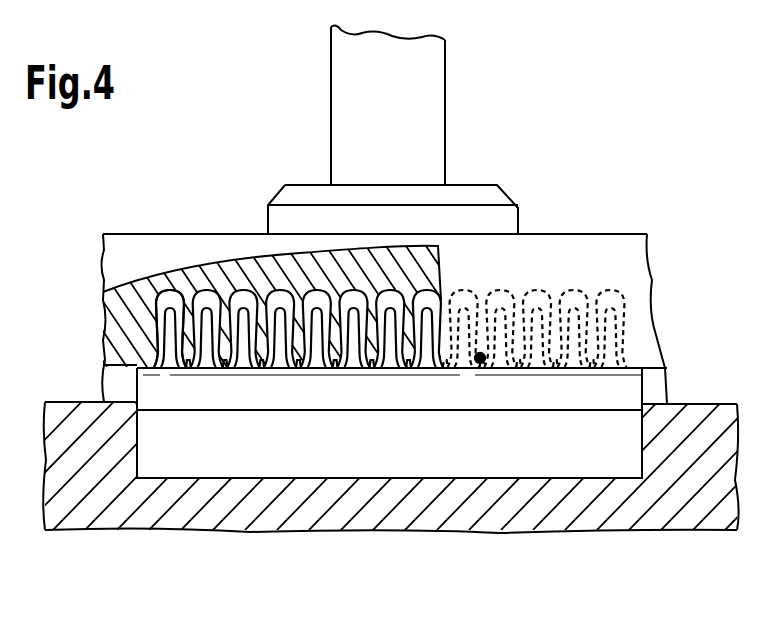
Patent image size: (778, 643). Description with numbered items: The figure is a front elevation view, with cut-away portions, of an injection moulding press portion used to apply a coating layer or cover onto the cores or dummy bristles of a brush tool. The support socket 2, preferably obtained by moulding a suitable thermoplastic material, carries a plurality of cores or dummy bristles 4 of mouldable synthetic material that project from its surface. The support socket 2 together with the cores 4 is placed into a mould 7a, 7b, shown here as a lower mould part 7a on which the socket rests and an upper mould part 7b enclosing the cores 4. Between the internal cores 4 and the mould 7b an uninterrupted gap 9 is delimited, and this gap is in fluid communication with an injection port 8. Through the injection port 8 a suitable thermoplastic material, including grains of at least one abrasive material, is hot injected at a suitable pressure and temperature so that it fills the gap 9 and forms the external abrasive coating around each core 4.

The support socket 2 is at (555, 462).
The core or dummy bristle 4 is at (165, 316).
The mould 7a is at (693, 418).
The mould 7b is at (638, 263).
The injection port 8 is at (478, 362).
The uninterrupted gap 9 is at (171, 298).